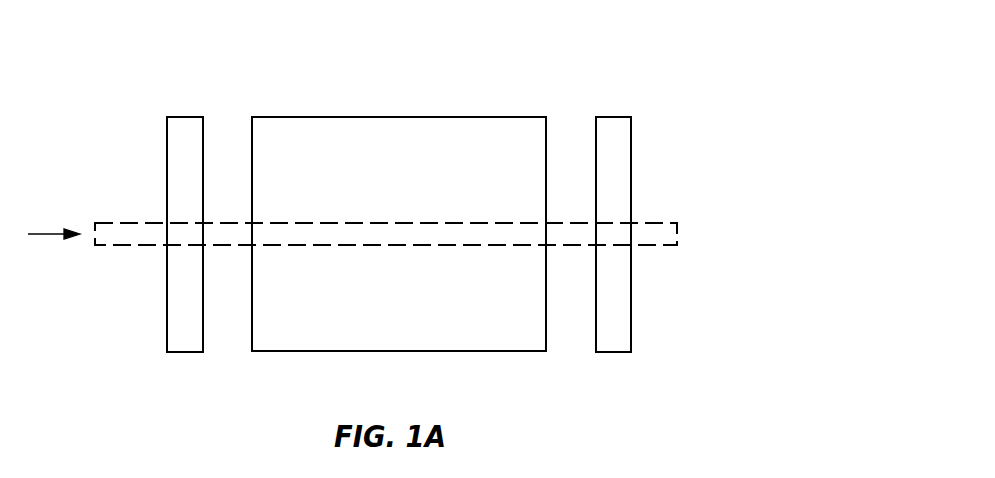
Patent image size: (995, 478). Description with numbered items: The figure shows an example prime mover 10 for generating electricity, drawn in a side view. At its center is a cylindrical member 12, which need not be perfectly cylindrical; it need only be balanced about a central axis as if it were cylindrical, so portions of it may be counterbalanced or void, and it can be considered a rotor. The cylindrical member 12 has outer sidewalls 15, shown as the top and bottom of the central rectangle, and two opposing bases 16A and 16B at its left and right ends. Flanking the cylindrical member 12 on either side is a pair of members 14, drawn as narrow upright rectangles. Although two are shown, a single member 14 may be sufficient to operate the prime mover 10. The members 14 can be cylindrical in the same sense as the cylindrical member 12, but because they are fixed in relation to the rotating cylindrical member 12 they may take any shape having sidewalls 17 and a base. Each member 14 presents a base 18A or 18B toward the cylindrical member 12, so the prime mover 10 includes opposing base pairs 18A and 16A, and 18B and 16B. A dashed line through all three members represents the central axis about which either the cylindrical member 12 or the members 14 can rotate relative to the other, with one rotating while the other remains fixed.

The prime mover 10 is at (700, 73).
The cylindrical member 12 is at (323, 117).
The member 14 is at (185, 117).
The outer sidewalls 15 is at (452, 117).
The base 16A is at (252, 140).
The base 16B is at (546, 140).
The sidewalls 17 is at (185, 352).
The base 18A is at (204, 335).
The base 18B is at (594, 333).